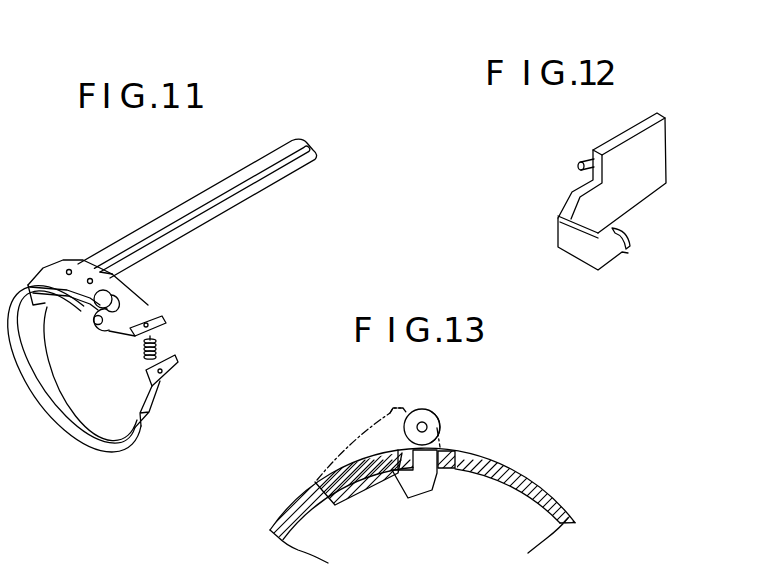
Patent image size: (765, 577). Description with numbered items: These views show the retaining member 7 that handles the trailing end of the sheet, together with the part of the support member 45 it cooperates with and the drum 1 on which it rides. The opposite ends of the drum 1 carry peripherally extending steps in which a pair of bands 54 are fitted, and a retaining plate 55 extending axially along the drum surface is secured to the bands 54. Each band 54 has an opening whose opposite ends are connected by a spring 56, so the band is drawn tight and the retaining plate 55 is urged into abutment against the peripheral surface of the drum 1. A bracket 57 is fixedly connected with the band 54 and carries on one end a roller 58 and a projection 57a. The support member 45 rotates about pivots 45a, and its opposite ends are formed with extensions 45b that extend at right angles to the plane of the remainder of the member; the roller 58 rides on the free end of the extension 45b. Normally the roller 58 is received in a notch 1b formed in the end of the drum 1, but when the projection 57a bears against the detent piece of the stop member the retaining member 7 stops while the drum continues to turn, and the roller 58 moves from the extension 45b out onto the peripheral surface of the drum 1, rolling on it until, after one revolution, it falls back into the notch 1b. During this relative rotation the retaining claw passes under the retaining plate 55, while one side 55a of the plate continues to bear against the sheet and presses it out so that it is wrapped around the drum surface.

In FIG. 11, the retaining member 7 is at (70, 252).
In FIG. 11, the band 54 is at (58, 414).
In FIG. 11, the retaining plate 55 is at (238, 197).
In FIG. 11, the one side of retaining plate 55a is at (194, 190).
In FIG. 11, the spring 56 is at (160, 343).
In FIG. 11, the bracket 57 is at (74, 306).
In FIG. 13, the bracket 57 is at (357, 443).
In FIG. 11, the projection 57a is at (102, 270).
In FIG. 13, the projection 57a is at (382, 416).
In FIG. 11, the roller 58 is at (117, 302).
In FIG. 13, the roller 58 is at (442, 424).
In FIG. 12, the support member 45 is at (623, 134).
In FIG. 12, the pivot 45a is at (582, 163).
In FIG. 12, the extension 45b is at (607, 254).
In FIG. 13, the extension 45b is at (412, 490).
In FIG. 13, the drum 1 is at (532, 473).
In FIG. 13, the notch 1b is at (448, 452).